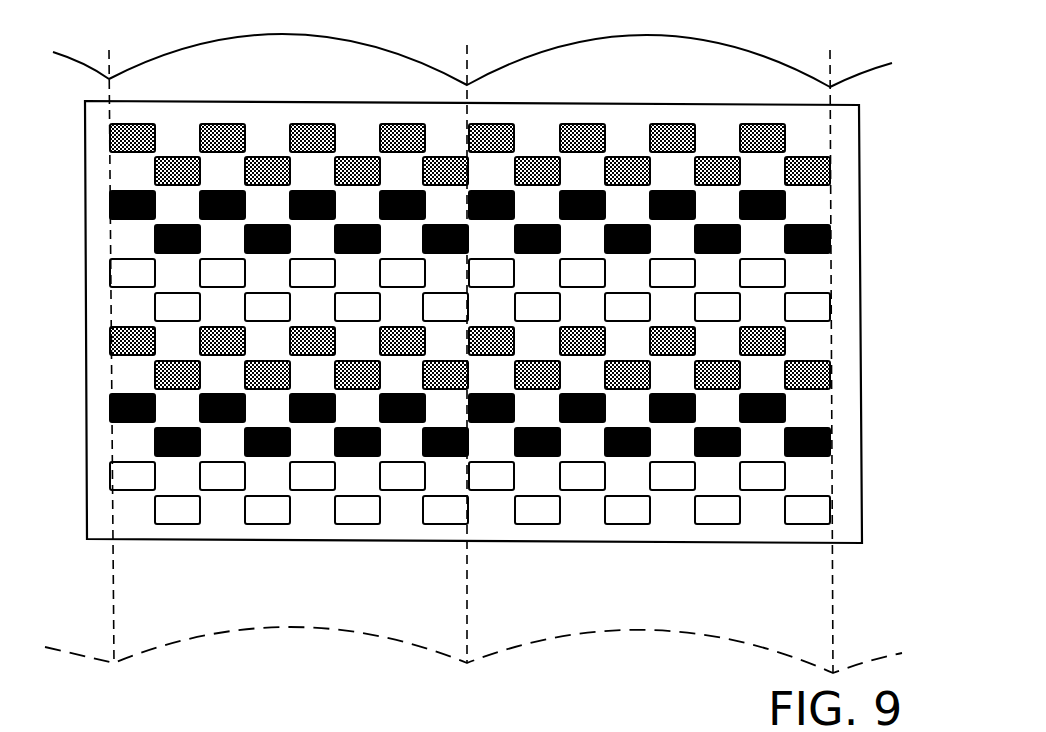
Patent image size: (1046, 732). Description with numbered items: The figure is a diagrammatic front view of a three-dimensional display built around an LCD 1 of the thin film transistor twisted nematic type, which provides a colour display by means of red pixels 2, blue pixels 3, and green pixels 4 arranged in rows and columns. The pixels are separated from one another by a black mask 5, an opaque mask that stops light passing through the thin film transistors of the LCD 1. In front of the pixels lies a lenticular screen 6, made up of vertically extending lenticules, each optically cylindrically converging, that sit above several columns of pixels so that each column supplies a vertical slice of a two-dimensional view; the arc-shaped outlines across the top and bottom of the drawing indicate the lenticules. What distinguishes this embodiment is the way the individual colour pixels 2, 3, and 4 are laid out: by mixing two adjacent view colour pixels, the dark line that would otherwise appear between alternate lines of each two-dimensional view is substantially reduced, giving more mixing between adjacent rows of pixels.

The LCD 1 is at (846, 330).
The red pixels 2 is at (158, 170).
The blue pixels 3 is at (160, 237).
The green pixels 4 is at (160, 305).
The black mask 5 is at (590, 525).
The lenticular screen 6 is at (748, 76).